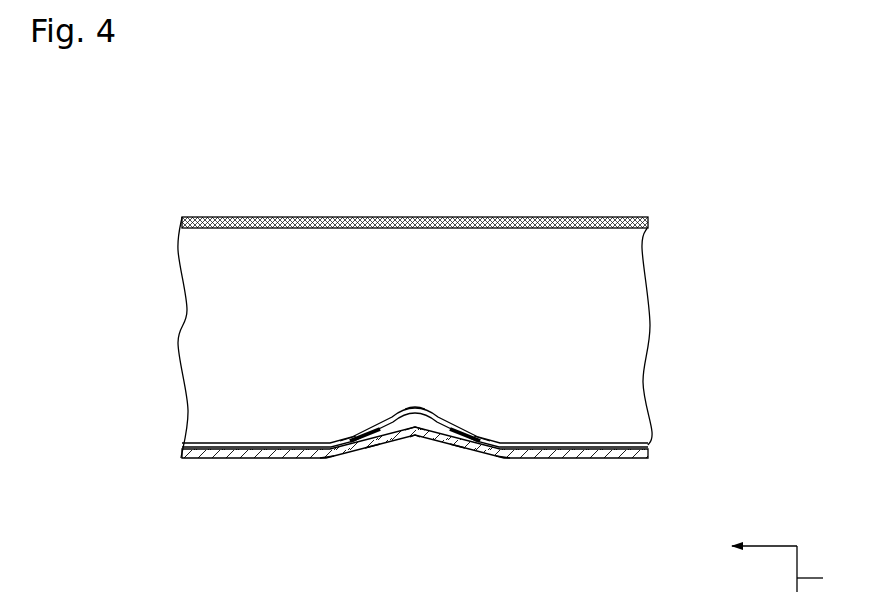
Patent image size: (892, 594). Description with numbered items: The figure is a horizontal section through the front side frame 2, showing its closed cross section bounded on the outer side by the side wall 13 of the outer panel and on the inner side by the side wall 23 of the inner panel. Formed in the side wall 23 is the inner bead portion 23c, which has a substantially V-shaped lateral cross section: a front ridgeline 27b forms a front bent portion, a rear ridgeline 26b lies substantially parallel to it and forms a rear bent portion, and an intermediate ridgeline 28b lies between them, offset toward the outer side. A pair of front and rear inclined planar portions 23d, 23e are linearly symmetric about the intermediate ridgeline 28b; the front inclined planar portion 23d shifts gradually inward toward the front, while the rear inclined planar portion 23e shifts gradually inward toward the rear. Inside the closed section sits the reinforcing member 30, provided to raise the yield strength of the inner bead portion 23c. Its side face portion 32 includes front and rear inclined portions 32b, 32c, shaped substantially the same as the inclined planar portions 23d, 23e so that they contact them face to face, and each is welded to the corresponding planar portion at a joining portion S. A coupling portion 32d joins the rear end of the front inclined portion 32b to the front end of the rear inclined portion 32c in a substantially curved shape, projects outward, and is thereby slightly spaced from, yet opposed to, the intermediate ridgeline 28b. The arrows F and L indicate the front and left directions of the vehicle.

The front side frame 2 is at (605, 122).
The side wall 13 is at (612, 210).
The side wall 23 is at (582, 468).
The inner bead portion 23c is at (436, 438).
The front inclined planar portion 23d is at (373, 454).
The rear inclined planar portion 23e is at (478, 453).
The front ridgeline 27b is at (333, 459).
The intermediate ridgeline 28b is at (413, 437).
The rear ridgeline 26b is at (498, 459).
The reinforcing member 30 is at (556, 424).
The side face portion 32 is at (590, 440).
The front inclined portion 32b is at (342, 437).
The rear inclined portion 32c is at (488, 436).
The coupling portion 32d is at (415, 407).
The joining portion S is at (358, 439).
The front direction F is at (762, 545).
The left direction L is at (817, 580).